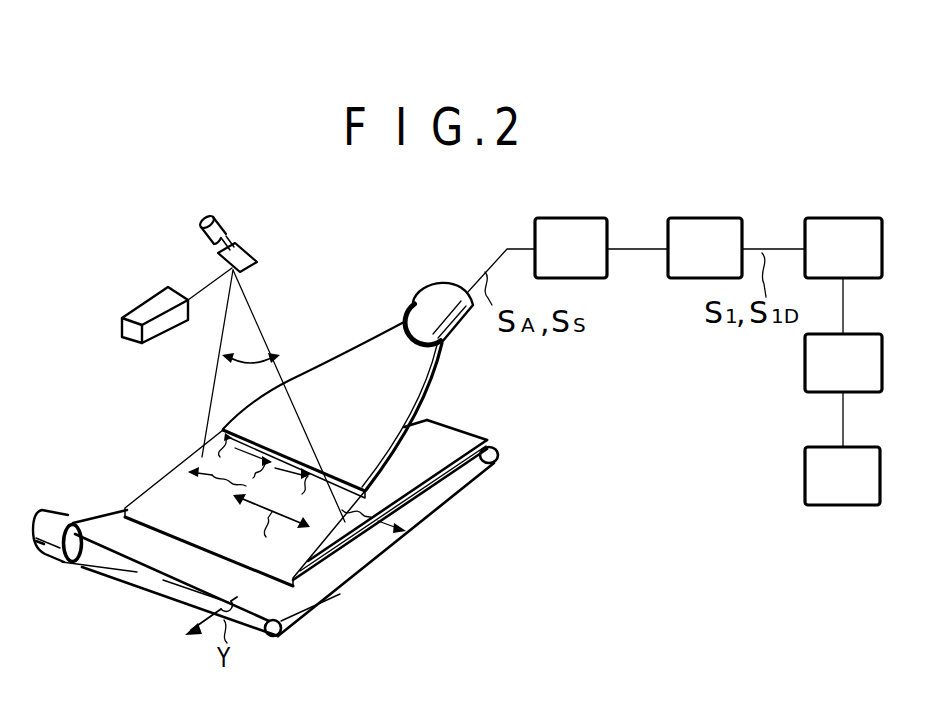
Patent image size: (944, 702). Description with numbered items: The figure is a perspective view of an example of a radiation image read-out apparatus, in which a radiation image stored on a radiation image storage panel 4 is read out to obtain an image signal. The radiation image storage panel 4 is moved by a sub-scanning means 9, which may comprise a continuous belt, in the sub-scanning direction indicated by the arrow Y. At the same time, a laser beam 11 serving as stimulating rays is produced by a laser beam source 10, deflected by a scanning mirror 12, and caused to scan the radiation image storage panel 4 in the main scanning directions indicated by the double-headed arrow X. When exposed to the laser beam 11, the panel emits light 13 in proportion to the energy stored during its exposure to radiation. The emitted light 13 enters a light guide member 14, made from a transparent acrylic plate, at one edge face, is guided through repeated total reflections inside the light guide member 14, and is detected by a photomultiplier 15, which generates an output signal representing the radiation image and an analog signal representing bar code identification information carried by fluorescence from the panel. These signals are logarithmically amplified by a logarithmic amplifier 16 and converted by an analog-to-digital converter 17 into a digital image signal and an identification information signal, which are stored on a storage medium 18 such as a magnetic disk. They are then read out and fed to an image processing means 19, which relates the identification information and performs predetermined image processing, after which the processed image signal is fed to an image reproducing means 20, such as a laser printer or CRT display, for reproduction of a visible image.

The radiation image storage panel 4 is at (438, 447).
The sub-scanning means 9 is at (105, 527).
The laser beam source 10 is at (150, 293).
The laser beam 11 is at (261, 331).
The scanning mirror 12 is at (262, 257).
The emitted light 13 is at (290, 460).
The light guide member 14 is at (373, 356).
The photomultiplier 15 is at (440, 292).
The logarithmic amplifier 16 is at (578, 217).
The analog-to-digital converter 17 is at (710, 217).
The storage medium 18 is at (848, 217).
The image processing means 19 is at (805, 367).
The image reproducing means 20 is at (805, 477).